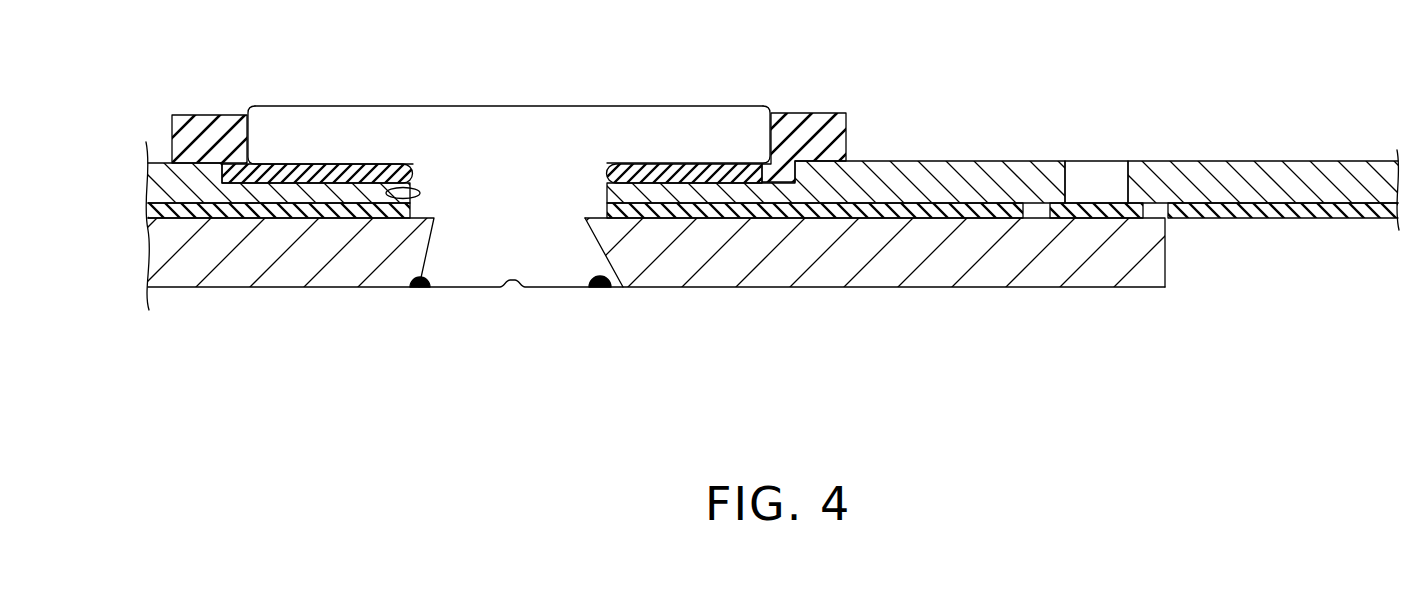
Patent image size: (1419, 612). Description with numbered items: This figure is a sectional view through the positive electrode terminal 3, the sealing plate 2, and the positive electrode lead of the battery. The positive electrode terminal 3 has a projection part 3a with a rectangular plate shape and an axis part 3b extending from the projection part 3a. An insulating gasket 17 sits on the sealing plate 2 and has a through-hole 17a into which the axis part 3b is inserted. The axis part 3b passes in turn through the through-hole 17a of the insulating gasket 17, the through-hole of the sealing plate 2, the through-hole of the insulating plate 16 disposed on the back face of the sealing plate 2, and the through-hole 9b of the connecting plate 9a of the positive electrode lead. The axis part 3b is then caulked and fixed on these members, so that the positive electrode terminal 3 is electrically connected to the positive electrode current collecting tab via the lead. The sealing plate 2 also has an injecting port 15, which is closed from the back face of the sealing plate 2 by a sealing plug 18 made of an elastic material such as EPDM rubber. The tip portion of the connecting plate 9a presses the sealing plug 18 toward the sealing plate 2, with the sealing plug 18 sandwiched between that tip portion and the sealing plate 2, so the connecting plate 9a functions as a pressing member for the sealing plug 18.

The sealing plate 2 is at (1005, 180).
The positive electrode terminal 3 is at (700, 100).
The projection part 3a is at (650, 123).
The axis part 3b is at (435, 197).
The connecting plate 9a is at (880, 273).
The through-hole 9b is at (593, 257).
The injecting port 15 is at (1067, 180).
The insulating plate 16 is at (935, 200).
The insulating gasket 17 is at (204, 106).
The through-hole 17a is at (350, 167).
The sealing plug 18 is at (1100, 219).